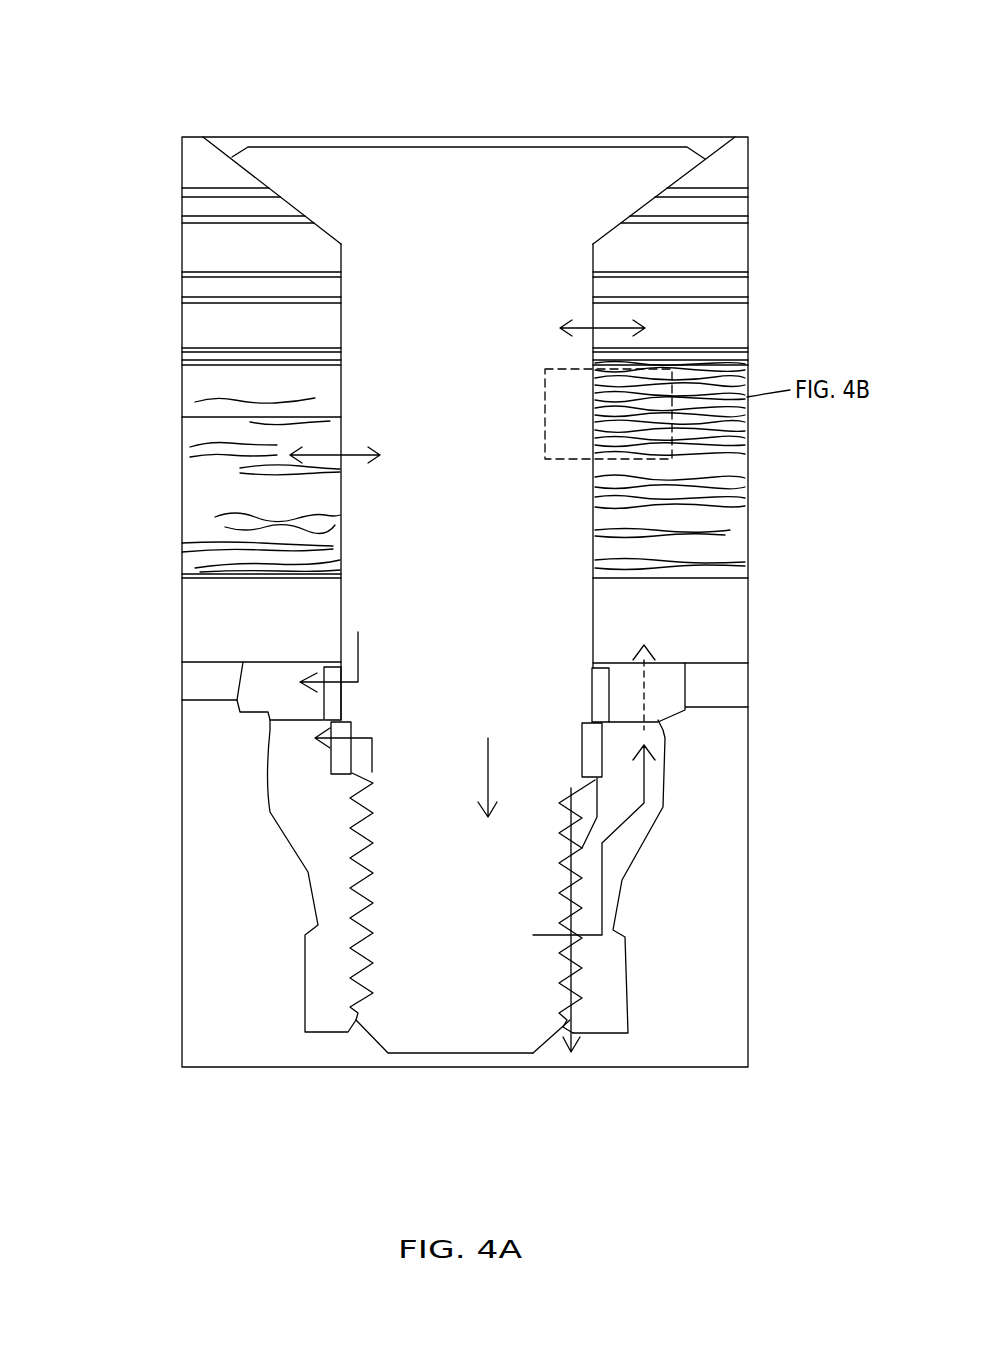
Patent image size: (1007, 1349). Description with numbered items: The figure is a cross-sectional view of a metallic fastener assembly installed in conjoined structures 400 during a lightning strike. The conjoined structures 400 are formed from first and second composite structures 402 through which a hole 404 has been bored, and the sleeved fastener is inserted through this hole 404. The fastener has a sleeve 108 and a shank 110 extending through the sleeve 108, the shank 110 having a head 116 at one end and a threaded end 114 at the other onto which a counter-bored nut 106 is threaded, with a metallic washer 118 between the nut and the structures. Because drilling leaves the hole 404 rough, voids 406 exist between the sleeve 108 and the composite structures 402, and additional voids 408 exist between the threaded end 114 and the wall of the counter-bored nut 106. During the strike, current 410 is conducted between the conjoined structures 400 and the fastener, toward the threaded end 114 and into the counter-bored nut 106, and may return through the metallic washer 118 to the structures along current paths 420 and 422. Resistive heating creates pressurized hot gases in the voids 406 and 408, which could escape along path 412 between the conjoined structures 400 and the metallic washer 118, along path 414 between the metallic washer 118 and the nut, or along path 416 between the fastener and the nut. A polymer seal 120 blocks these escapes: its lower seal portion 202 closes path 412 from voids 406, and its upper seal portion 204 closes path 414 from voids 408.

The conjoined structures 400 is at (130, 342).
The hole 404 is at (520, 105).
The head 116 is at (402, 165).
The composite structures 402 is at (193, 238).
The voids 406 is at (333, 405).
The sleeve 108 is at (588, 311).
The current 410 is at (373, 442).
The shank 110 is at (533, 573).
The polymer seal 120 is at (380, 707).
The path 412 is at (363, 647).
The lower seal portion 202 is at (325, 705).
The upper seal portion 204 is at (333, 758).
The path 414 is at (373, 745).
The additional voids 408 is at (337, 802).
The threaded end 114 is at (375, 863).
The path 416 is at (578, 985).
The counter-bored nut 106 is at (610, 982).
The metallic washer 118 is at (660, 687).
The current path 422 is at (650, 668).
The current path 420 is at (650, 783).